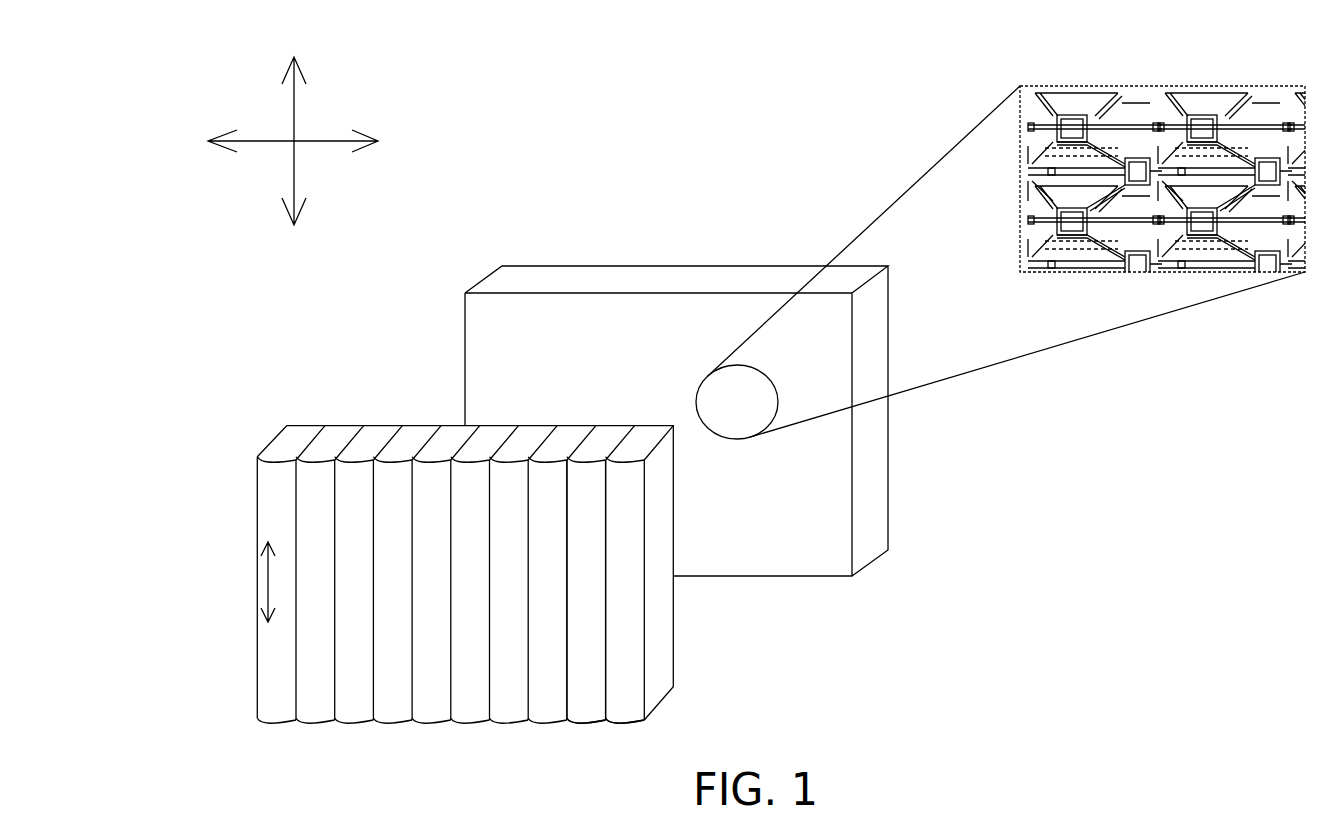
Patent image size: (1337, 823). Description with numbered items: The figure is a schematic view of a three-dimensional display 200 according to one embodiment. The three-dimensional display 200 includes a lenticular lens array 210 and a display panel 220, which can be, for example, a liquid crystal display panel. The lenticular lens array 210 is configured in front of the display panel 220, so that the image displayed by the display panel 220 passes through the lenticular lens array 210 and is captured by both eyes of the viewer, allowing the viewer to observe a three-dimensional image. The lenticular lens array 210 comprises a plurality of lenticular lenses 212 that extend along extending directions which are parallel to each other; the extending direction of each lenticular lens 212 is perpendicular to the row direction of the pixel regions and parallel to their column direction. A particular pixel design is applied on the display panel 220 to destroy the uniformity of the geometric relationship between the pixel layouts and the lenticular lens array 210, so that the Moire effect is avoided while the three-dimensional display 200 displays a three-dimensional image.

The three-dimensional display 200 is at (772, 397).
The lenticular lens array 210 is at (503, 602).
The lenticular lens 212 is at (611, 619).
The display panel 220 is at (890, 502).